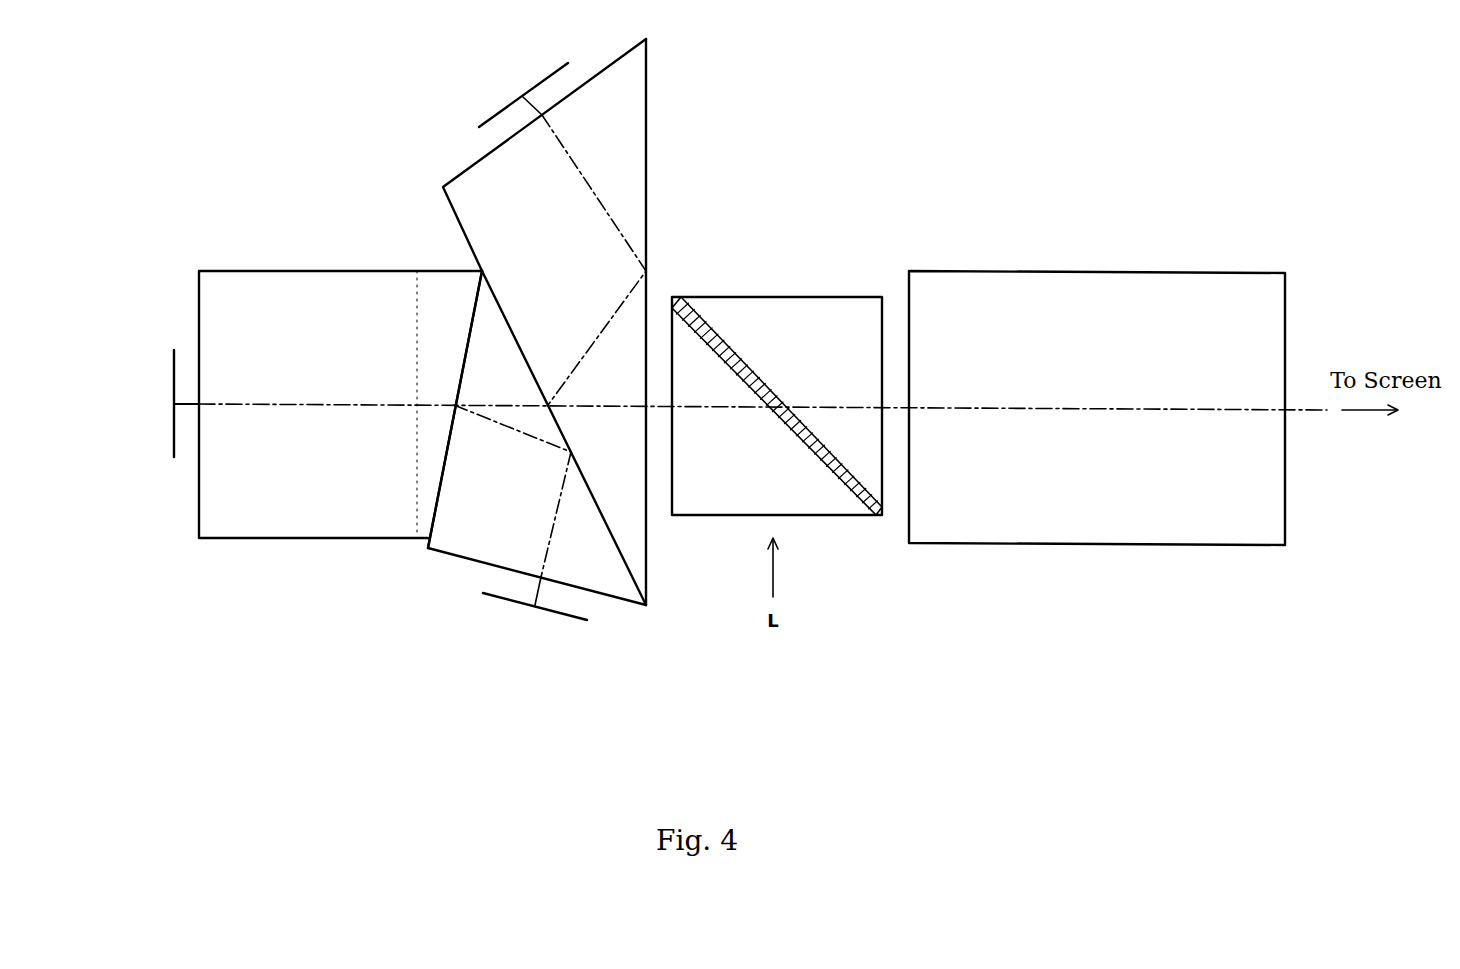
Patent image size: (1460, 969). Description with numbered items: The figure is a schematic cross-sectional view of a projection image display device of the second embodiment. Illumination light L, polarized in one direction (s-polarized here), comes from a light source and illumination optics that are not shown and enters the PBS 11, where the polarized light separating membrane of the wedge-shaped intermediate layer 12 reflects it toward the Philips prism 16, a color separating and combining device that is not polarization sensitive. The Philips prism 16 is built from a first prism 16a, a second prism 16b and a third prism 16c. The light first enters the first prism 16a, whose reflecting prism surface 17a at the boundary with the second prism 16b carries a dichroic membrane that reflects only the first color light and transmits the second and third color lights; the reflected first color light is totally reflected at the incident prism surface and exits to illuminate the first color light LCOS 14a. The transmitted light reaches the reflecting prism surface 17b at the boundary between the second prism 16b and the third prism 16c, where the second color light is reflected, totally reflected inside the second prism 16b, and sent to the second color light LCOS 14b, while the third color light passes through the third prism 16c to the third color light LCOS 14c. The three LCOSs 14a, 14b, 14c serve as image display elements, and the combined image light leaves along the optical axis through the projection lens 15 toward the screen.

The PBS 11 is at (775, 305).
The wedge-shaped intermediate layer 12 is at (835, 473).
The first color light LCOS 14a is at (512, 103).
The second color light LCOS 14b is at (502, 600).
The third color light LCOS 14c is at (174, 428).
The projection lens 15 is at (1007, 530).
The Philips prism 16 is at (457, 353).
The first prism 16a is at (628, 160).
The second prism 16b is at (620, 596).
The third prism 16c is at (262, 280).
The reflecting prism surface 17a is at (628, 562).
The reflecting prism surface 17b is at (430, 512).